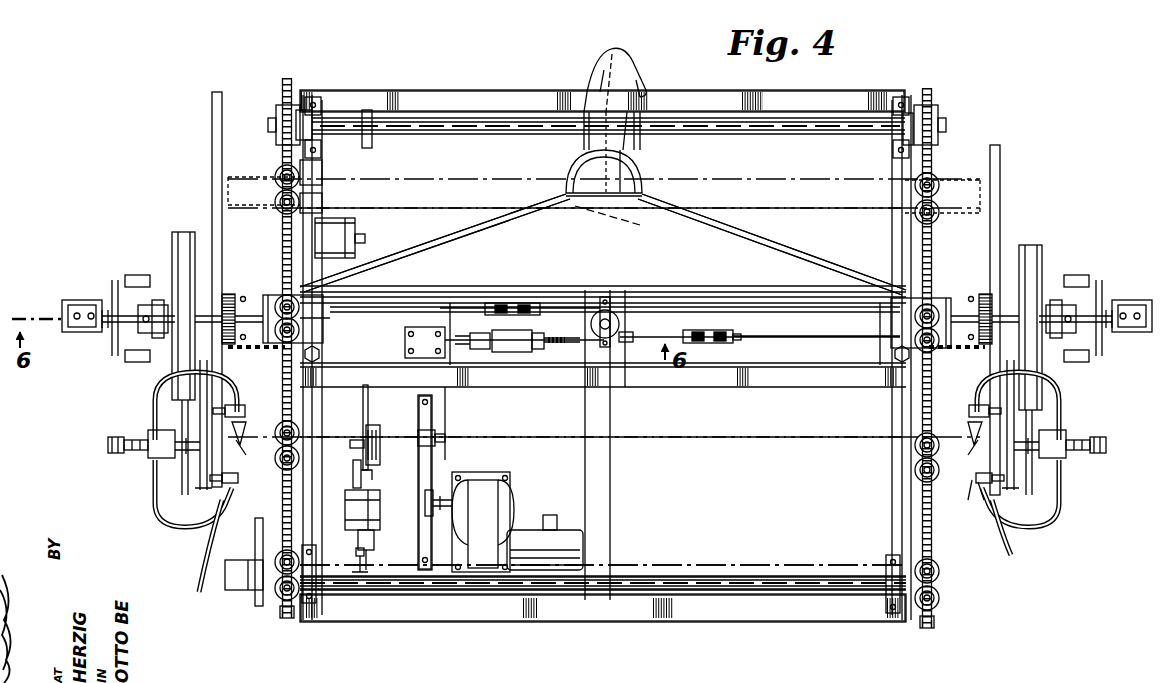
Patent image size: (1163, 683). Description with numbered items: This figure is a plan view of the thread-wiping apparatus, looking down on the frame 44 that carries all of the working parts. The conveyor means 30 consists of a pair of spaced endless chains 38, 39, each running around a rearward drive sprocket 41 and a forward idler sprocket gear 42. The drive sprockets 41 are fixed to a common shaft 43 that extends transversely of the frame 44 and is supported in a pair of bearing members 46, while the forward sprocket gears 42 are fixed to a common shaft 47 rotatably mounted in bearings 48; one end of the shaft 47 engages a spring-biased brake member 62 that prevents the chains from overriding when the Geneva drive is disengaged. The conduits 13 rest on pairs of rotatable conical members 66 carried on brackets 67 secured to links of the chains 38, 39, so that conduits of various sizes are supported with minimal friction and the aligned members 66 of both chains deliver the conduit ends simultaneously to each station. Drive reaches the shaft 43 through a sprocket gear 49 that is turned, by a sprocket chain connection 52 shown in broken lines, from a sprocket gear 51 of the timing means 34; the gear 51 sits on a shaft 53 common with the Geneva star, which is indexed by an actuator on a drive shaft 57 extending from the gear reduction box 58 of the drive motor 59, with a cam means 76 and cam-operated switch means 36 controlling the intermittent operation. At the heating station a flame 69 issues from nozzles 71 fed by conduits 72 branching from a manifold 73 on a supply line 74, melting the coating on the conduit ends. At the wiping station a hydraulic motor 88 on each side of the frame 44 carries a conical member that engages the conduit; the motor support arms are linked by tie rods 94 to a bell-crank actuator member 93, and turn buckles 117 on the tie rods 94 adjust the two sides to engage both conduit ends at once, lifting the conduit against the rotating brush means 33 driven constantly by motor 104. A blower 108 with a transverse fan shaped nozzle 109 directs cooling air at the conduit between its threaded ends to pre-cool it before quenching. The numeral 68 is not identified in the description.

The conduit 13 is at (811, 344).
The conveyor means 30 is at (287, 76).
The rotating brush means 33 is at (234, 293).
The timing means 34 is at (412, 480).
The cam-operated switch means 36 is at (356, 553).
The endless chain 38 is at (287, 628).
The endless chain 39 is at (927, 630).
The rearward drive sprocket 41 is at (283, 97).
The forward idler sprocket gear 42 is at (278, 616).
The shaft 43 is at (462, 135).
The frame 44 is at (461, 90).
The bearing member 46 is at (322, 108).
The shaft 47 is at (660, 578).
The bearing 48 is at (310, 604).
The sprocket gear 49 is at (372, 136).
The sprocket gear 51 is at (355, 475).
The sprocket chain connection 52 is at (358, 227).
The shaft 53 is at (360, 440).
The drive shaft 57 is at (358, 536).
The gear reduction box 58 is at (496, 502).
The drive motor 59 is at (562, 530).
The brake member 62 is at (255, 546).
The conical member 66 is at (275, 203).
The bracket 67 is at (300, 204).
The support post 68 is at (142, 463).
The flame 69 is at (246, 440).
The nozzle 71 is at (241, 420).
The conduit 72 is at (157, 405).
The manifold 73 is at (148, 438).
The supply line 74 is at (108, 446).
The cam means 76 is at (360, 502).
The hydraulic motor 88 is at (110, 308).
The actuator member 93 is at (628, 334).
The tie rod 94 is at (538, 313).
The motor 104 is at (168, 320).
The blower 108 is at (663, 211).
The fan shaped nozzle 109 is at (786, 256).
The turn buckle 117 is at (530, 313).